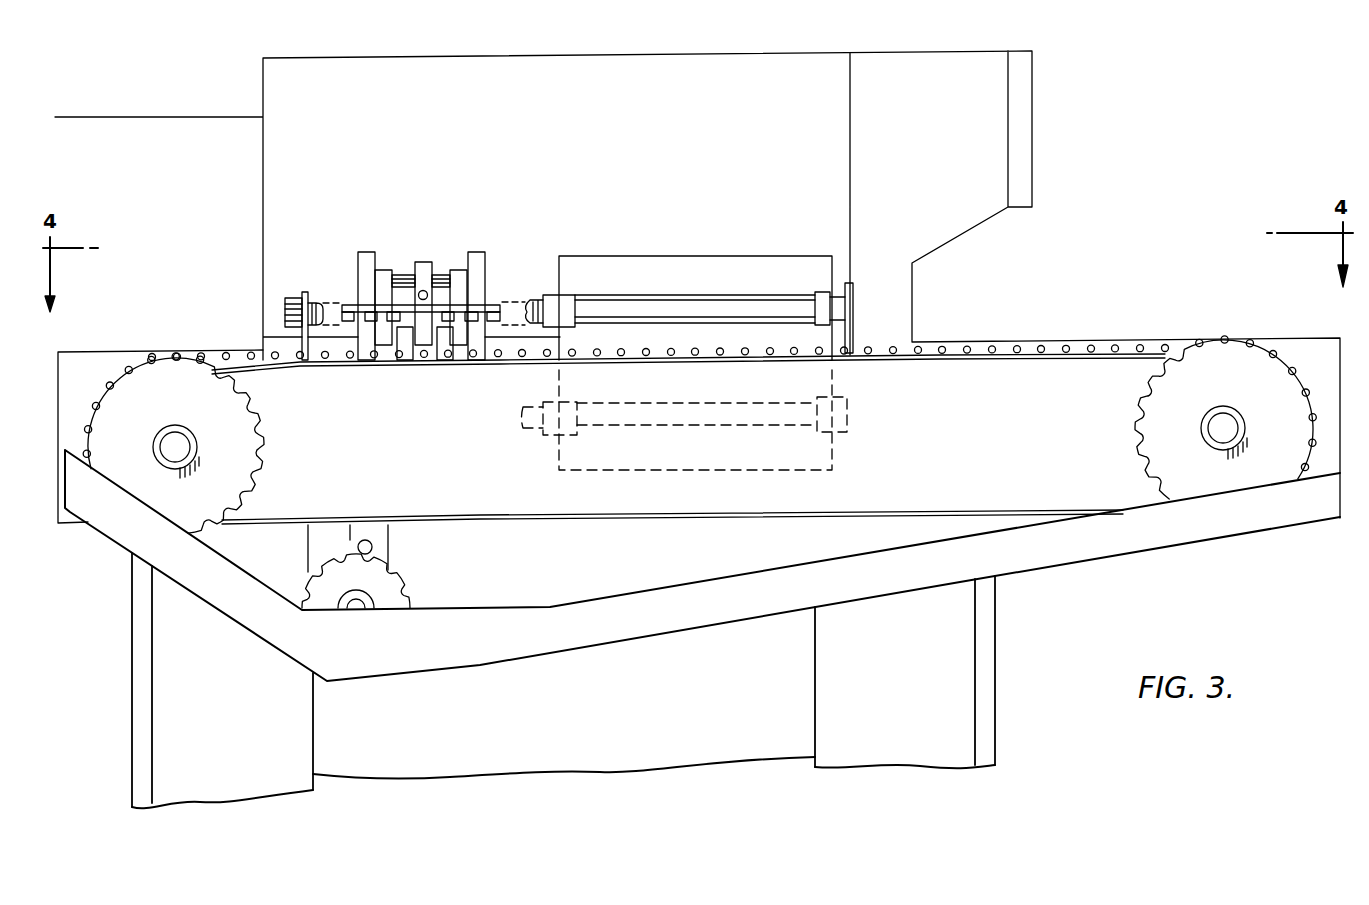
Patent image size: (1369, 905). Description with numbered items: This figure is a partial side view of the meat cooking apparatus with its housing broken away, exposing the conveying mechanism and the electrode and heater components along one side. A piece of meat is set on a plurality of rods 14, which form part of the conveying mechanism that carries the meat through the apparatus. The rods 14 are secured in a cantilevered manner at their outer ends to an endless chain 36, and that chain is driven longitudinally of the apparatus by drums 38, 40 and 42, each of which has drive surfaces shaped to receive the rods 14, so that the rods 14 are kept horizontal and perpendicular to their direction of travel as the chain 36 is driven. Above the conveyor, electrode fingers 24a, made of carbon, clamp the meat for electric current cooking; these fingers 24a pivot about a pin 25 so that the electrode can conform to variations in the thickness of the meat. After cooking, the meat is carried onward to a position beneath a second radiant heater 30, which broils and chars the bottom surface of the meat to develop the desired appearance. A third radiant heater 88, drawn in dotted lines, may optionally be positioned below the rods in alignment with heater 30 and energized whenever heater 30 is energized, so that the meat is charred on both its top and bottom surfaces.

The rods 14 is at (1095, 348).
The electrode fingers 24a is at (370, 310).
The pin 25 is at (428, 290).
The second radiant heater 30 is at (728, 255).
The endless chain 36 is at (848, 362).
The drum 38 is at (254, 448).
The drum 40 is at (1150, 427).
The drum 42 is at (408, 583).
The third radiant heater 88 is at (833, 448).